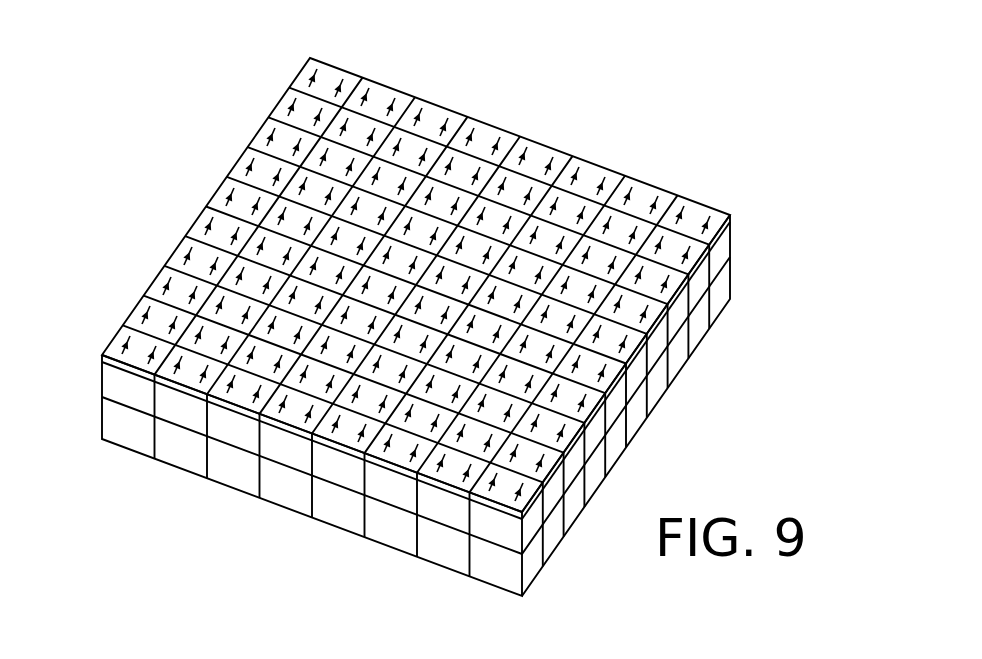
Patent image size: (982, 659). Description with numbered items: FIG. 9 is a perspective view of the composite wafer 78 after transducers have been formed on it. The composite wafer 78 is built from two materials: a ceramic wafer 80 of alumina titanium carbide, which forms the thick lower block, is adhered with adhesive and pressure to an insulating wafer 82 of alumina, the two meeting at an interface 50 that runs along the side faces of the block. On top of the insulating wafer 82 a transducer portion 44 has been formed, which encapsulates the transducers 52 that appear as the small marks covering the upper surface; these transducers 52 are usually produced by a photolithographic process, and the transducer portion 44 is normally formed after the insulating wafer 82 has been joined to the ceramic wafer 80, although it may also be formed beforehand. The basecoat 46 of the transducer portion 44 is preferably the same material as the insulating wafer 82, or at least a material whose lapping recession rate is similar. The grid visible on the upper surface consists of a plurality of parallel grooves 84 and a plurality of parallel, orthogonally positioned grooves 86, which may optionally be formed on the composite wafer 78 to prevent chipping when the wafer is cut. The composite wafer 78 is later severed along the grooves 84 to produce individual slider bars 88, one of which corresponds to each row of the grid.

The composite wafer 78 is at (557, 124).
The slider bars 88 is at (307, 59).
The transducers 52 is at (690, 215).
The parallel grooves 84 is at (521, 457).
The orthogonally positioned grooves 86 is at (470, 460).
The ceramic wafer 80 is at (132, 424).
The basecoat 46 is at (728, 214).
The insulating wafer 82 is at (121, 377).
The transducer portion 44 is at (727, 232).
The interface 50 is at (117, 403).